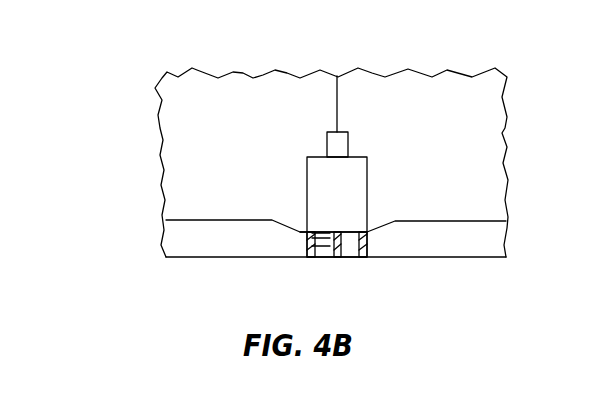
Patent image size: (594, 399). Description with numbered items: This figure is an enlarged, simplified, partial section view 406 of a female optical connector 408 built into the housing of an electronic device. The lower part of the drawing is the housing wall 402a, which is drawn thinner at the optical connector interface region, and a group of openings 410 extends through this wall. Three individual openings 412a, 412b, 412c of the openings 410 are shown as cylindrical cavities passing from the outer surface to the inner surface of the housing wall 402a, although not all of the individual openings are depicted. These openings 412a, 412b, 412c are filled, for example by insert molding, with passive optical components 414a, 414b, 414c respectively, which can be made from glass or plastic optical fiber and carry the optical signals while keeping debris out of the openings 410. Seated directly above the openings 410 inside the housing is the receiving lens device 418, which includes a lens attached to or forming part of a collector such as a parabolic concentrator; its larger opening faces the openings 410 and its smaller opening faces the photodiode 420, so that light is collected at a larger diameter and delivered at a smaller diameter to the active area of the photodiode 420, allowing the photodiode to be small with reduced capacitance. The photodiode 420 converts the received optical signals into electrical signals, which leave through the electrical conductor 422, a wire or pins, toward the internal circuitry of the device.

The simplified, partial section view 406 is at (192, 68).
The female optical connector 408 is at (257, 98).
The electrical conductor 422 is at (338, 98).
The photodiode 420 is at (340, 143).
The receiving lens device 418 is at (350, 188).
The housing wall 402a is at (482, 235).
The passive optical component 414a is at (312, 233).
The passive optical component 414b is at (312, 238).
The passive optical component 414c is at (312, 246).
The openings 410 is at (296, 285).
The individual opening 412a is at (361, 257).
The individual opening 412b is at (337, 257).
The individual opening 412c is at (312, 257).